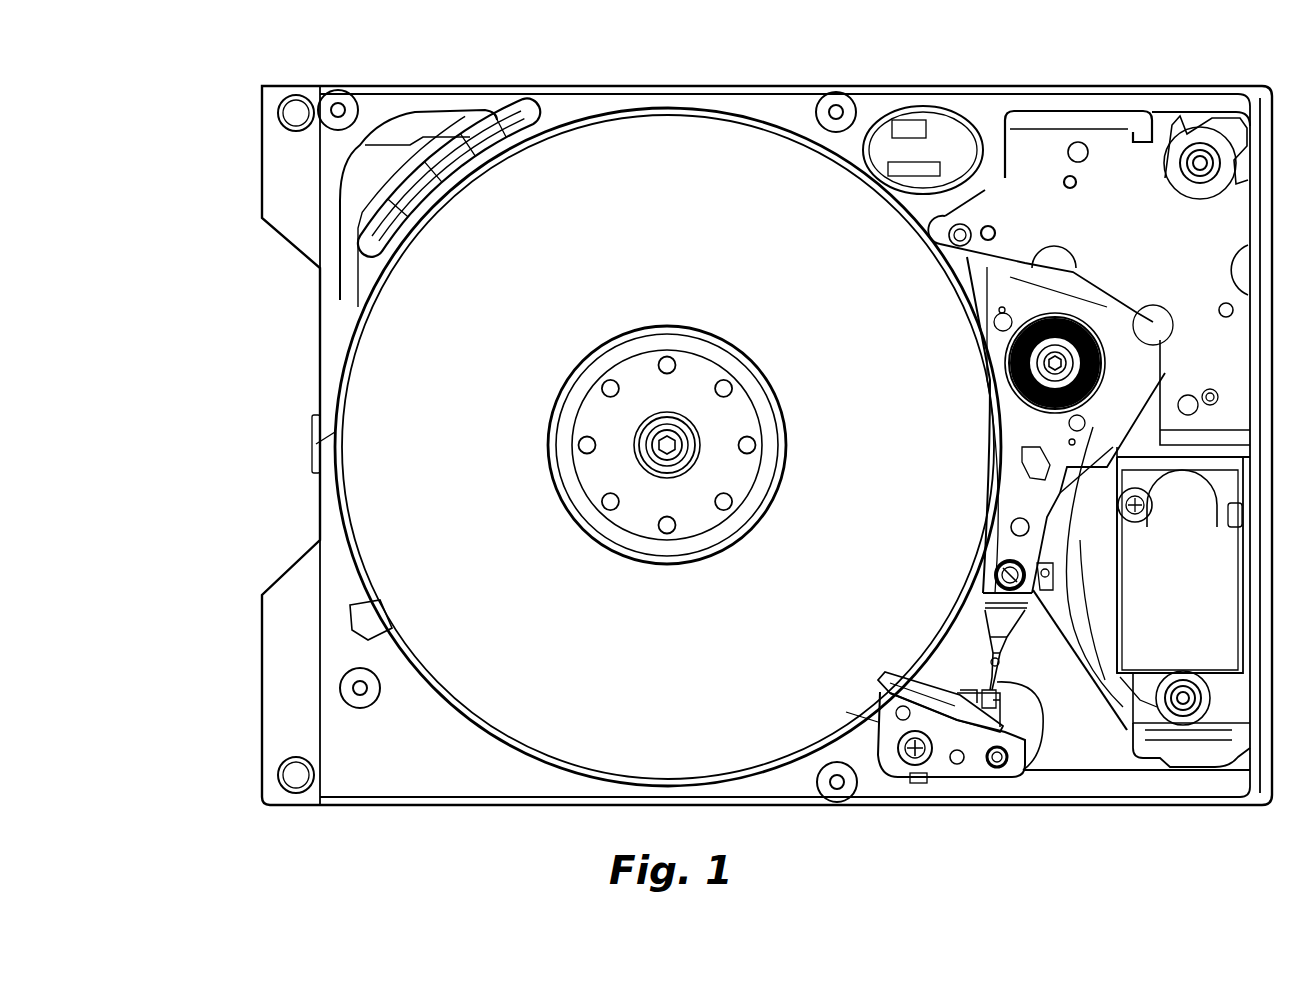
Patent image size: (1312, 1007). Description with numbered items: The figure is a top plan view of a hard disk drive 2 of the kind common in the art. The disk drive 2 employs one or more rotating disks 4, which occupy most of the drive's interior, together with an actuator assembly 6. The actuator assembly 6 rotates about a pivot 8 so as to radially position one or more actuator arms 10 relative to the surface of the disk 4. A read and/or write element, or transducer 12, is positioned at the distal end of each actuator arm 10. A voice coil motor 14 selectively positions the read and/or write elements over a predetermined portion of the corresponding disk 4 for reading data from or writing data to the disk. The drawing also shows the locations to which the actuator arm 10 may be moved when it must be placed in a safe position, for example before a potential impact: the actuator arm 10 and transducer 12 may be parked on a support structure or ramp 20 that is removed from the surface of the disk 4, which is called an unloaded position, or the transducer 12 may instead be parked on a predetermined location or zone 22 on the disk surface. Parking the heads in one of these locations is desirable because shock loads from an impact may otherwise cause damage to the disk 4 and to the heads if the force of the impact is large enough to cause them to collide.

The disk drive 2 is at (236, 111).
The disk 4 is at (689, 162).
The actuator assembly 6 is at (1087, 577).
The pivot 8 is at (1020, 366).
The actuator arm 10 is at (1020, 552).
The transducer 12 is at (1020, 687).
The voice coil motor 14 is at (1124, 203).
The ramp 20 is at (1035, 705).
The zone 22 is at (577, 487).